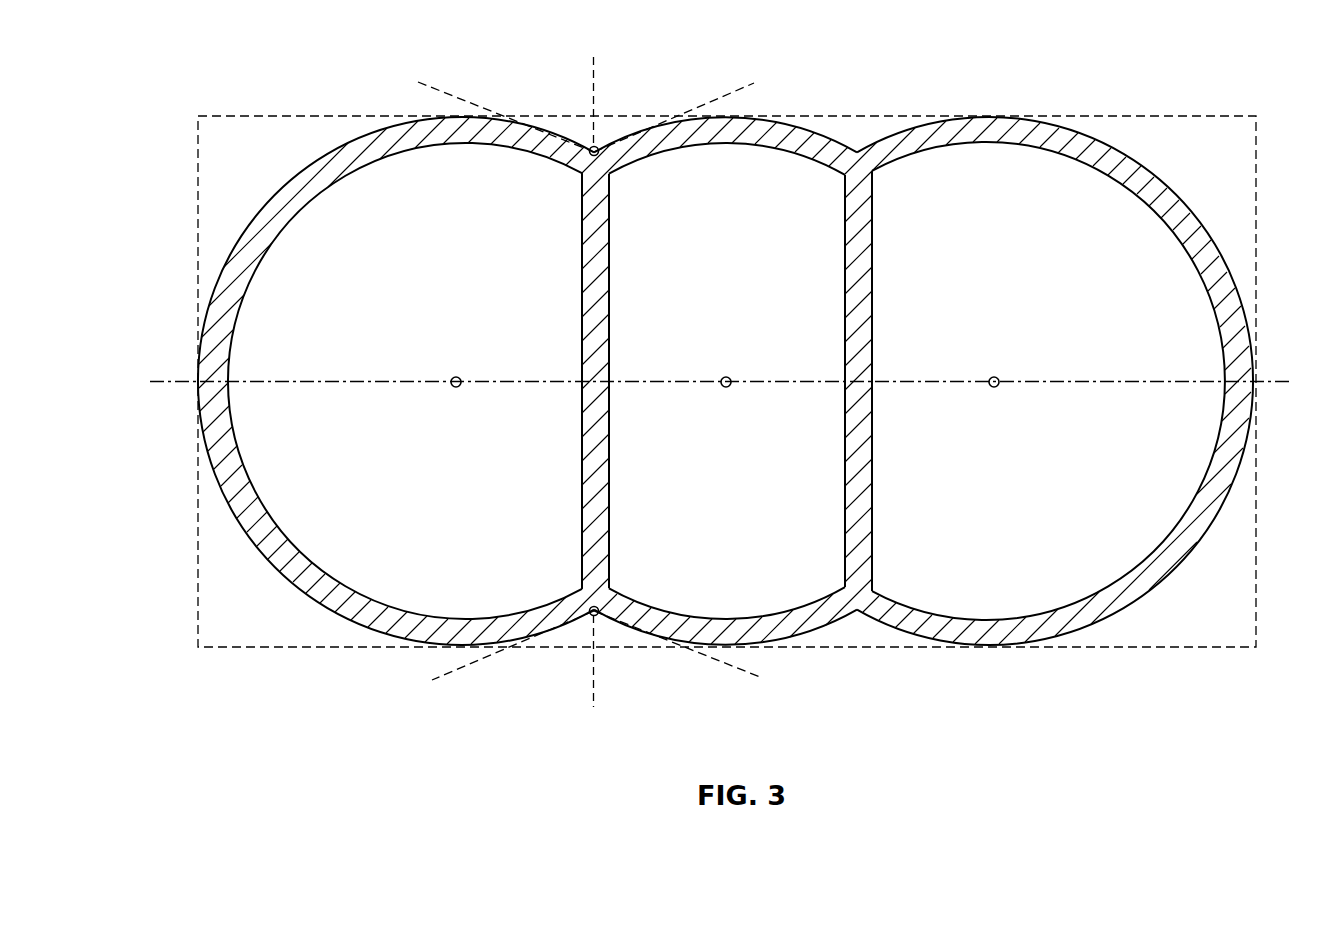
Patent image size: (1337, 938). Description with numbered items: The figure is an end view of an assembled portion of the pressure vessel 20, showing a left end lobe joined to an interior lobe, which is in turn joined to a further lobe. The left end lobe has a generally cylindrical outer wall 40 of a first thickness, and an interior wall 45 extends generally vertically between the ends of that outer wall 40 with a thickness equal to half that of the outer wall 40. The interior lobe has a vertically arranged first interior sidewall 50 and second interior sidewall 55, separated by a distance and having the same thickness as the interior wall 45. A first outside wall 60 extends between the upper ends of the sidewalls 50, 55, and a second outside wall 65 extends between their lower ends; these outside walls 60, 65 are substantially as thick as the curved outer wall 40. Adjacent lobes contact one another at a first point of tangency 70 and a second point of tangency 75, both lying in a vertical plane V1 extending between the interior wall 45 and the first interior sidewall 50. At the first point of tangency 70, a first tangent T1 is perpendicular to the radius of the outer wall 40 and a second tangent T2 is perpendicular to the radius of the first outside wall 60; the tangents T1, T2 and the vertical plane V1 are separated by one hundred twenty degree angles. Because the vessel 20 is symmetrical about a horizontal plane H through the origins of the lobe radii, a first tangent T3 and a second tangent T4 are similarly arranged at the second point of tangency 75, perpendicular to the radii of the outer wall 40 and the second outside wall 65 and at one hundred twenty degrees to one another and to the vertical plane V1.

The pressure vessel 20 is at (214, 70).
The cylindrical outer wall 40 is at (210, 397).
The interior wall 45 is at (580, 383).
The first interior sidewall 50 is at (610, 256).
The second interior sidewall 55 is at (844, 258).
The first outside wall 60 is at (725, 136).
The second outside wall 65 is at (725, 616).
The first point of tangency 70 is at (599, 157).
The second point of tangency 75 is at (600, 609).
The horizontal axis H is at (722, 382).
The vertical plane V1 is at (638, 732).
The first tangent T1 is at (434, 87).
The second tangent T2 is at (742, 89).
The first tangent T3 is at (448, 672).
The second tangent T4 is at (743, 670).